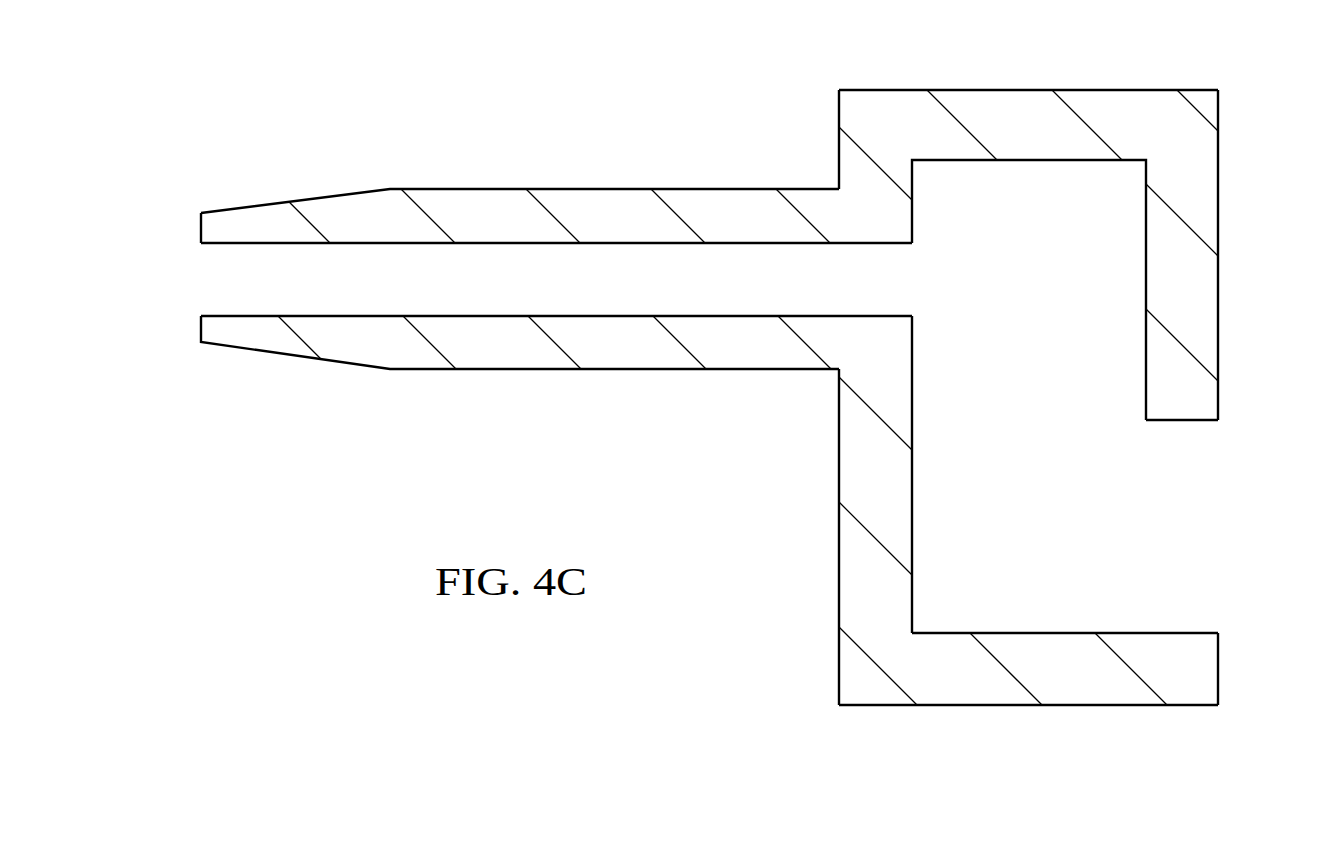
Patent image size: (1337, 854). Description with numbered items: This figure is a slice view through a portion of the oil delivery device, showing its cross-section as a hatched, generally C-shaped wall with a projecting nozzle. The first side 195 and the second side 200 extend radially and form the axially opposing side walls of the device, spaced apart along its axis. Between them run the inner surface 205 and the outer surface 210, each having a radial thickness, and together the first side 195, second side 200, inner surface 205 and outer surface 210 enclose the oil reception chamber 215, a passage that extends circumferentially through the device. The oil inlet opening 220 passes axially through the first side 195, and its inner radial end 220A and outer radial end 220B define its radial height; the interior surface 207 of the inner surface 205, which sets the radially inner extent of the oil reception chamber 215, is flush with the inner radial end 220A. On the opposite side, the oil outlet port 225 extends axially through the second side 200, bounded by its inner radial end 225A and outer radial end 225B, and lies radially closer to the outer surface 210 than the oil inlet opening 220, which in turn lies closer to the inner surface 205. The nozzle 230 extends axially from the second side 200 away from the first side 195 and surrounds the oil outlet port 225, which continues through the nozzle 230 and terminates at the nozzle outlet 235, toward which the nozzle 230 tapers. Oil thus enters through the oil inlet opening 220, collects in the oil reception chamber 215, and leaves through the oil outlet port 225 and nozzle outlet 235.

The first side 195 is at (1218, 172).
The second side 200 is at (838, 554).
The inner surface 205 is at (1108, 706).
The interior surface 207 is at (1024, 632).
The outer surface 210 is at (1115, 88).
The oil reception chamber 215 is at (1022, 172).
The oil inlet opening 220 is at (1237, 542).
The inner radial end 220A is at (1180, 632).
The outer radial end 220B is at (1186, 421).
The oil outlet port 225 is at (920, 278).
The inner radial end 225A is at (892, 243).
The outer radial end 225B is at (890, 316).
The nozzle 230 is at (470, 196).
The nozzle outlet 235 is at (200, 220).